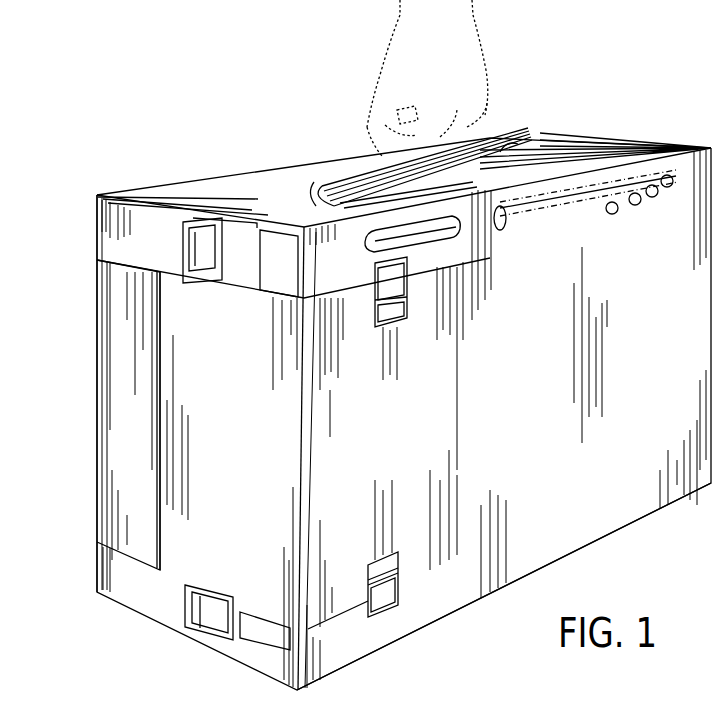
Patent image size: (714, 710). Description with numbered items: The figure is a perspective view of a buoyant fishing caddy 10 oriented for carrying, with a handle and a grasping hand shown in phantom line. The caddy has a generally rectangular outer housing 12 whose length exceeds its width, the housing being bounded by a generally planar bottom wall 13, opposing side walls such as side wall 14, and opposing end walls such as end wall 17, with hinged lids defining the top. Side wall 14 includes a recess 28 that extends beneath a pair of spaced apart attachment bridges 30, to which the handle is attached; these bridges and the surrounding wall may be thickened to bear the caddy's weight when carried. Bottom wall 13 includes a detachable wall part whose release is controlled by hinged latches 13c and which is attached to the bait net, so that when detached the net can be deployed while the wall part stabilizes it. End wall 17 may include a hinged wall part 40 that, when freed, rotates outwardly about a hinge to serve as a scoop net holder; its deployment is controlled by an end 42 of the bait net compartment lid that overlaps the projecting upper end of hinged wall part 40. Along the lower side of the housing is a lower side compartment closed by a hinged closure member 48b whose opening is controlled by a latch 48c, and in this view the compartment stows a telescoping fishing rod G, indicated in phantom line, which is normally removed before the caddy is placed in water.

The fishing caddy 10 is at (147, 83).
The outer housing 12 is at (210, 168).
The bottom wall 13 is at (540, 390).
The hinged latches 13c is at (392, 282).
The side wall 14 is at (611, 143).
The end wall 17 is at (250, 435).
The recess 28 is at (393, 163).
The attachment bridges 30 is at (323, 190).
The hinged wall part 40 is at (143, 312).
The end of lid 42 is at (100, 377).
The latch member 48b is at (242, 275).
The latch member 48c is at (183, 268).
The telescoping fishing rod G is at (507, 230).